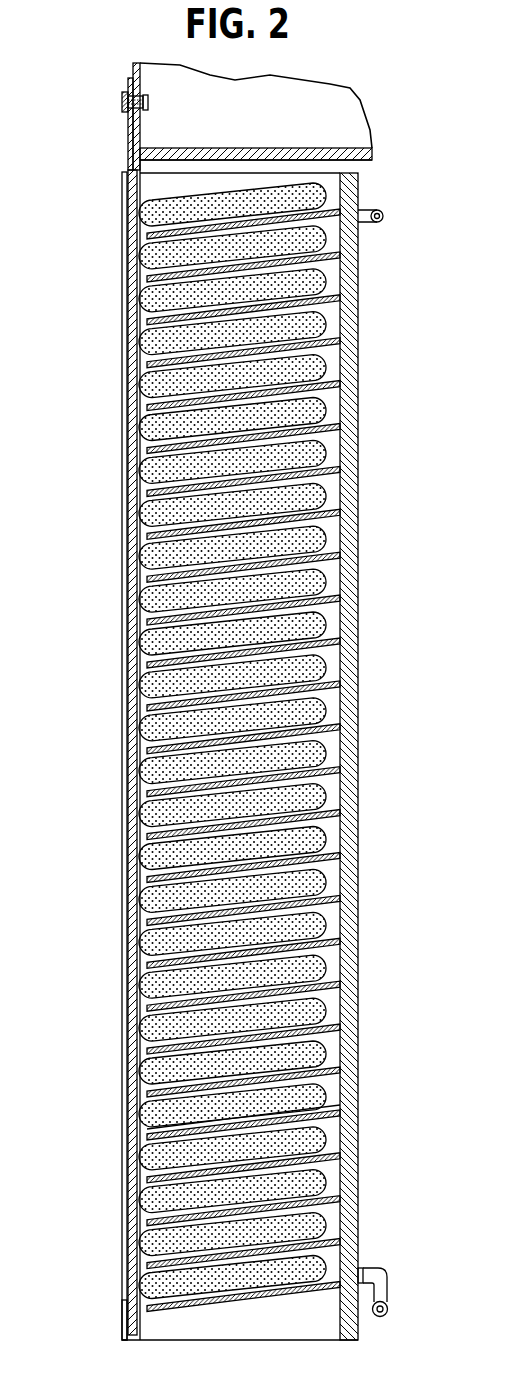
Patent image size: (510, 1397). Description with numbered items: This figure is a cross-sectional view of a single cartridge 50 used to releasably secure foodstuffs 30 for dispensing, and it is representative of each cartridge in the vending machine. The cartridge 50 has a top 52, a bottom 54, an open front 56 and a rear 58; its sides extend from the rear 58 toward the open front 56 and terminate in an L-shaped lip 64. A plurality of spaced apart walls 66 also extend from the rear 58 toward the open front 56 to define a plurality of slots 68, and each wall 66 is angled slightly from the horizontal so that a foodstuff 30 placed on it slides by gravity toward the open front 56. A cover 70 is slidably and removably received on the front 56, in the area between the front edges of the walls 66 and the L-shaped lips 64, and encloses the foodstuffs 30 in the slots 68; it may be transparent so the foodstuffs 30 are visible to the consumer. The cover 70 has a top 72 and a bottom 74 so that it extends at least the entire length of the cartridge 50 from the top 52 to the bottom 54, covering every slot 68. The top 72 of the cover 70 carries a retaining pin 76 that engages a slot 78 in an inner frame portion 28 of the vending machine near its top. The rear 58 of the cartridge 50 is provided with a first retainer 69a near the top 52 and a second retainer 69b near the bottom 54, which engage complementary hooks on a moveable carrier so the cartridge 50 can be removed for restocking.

The inner frame portion 28 is at (320, 148).
The foodstuff 30 is at (155, 1293).
The cartridge 50 is at (421, 177).
The top 52 is at (353, 173).
The bottom 54 is at (243, 1342).
The open front 56 is at (150, 1101).
The rear 58 is at (358, 1007).
The L-shaped lip 64 is at (122, 643).
The spaced apart wall 66 is at (317, 860).
The slot 68 is at (327, 915).
The first retainer 69a is at (380, 221).
The second retainer 69b is at (388, 1280).
The cover 70 is at (128, 200).
The top of the cover 72 is at (133, 148).
The bottom of the cover 74 is at (124, 1333).
The retaining pin 76 is at (122, 97).
The slot 78 is at (143, 112).